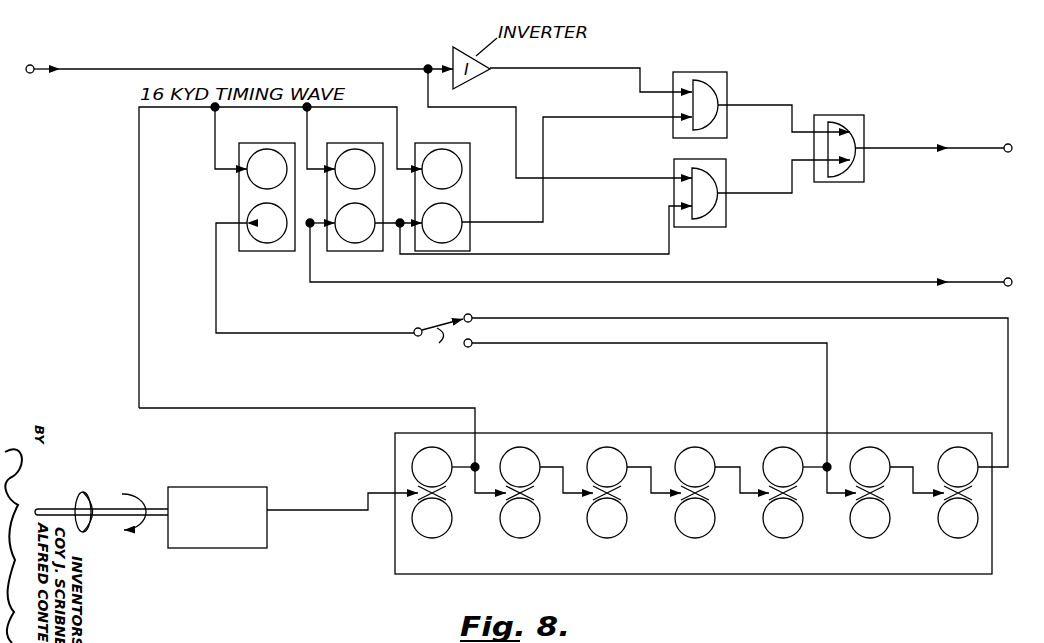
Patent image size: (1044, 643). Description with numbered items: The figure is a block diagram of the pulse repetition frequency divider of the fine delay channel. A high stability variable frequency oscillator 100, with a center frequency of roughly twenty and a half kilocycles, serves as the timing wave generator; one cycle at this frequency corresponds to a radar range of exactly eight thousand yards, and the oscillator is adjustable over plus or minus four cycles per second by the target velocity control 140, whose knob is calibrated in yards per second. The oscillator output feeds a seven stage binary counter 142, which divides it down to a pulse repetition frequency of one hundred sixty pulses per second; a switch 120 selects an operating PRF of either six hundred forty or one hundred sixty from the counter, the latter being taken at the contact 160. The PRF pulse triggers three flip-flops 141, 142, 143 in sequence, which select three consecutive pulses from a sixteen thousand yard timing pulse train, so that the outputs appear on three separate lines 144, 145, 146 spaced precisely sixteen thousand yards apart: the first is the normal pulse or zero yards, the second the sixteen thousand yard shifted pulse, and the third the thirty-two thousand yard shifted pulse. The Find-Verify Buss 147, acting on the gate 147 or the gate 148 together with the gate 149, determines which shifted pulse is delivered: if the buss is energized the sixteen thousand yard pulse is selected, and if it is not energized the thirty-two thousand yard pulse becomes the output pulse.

The variable frequency oscillator 100 is at (203, 487).
The switch 120 is at (339, 294).
The target velocity control 140 is at (96, 533).
The flip-flop 141 is at (272, 143).
The seven stage binary counter 142 is at (368, 143).
The flip-flop 143 is at (461, 143).
The normal pulse line 144 is at (740, 282).
The 16K yard pulse line 145 is at (641, 254).
The 32K yard pulse line 146 is at (590, 117).
The Find-Verify Buss and gate 147 is at (28, 74).
The gate 148 is at (728, 88).
The gate 149 is at (866, 124).
The switch contact 160 PRF 160 is at (750, 400).